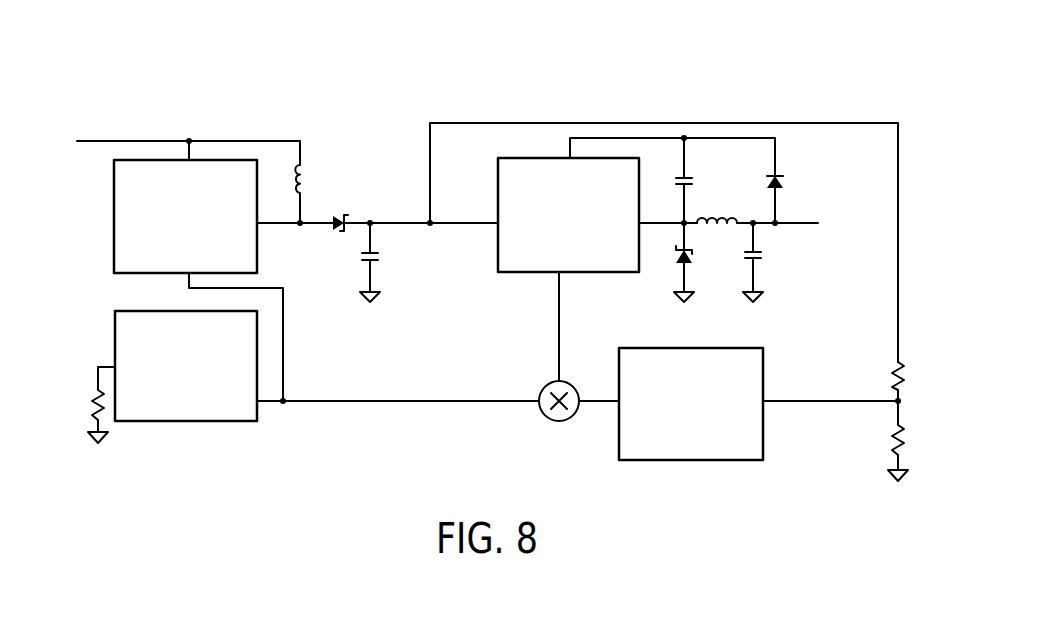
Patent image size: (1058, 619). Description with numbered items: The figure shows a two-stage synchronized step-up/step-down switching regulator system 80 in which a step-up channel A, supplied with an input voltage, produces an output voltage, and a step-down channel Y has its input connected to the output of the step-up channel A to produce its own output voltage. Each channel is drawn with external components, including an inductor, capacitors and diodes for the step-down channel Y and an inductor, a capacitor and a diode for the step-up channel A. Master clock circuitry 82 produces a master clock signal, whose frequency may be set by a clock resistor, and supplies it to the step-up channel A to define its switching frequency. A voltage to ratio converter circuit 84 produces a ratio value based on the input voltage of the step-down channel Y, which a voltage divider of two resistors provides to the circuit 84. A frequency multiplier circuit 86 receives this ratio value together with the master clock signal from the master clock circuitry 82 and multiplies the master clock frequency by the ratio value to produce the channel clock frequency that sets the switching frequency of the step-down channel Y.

The two-stage synchronized step-up/step-down switching regulator system 80 is at (481, 60).
The master clock circuitry 82 is at (220, 421).
The voltage to ratio converter circuit 84 is at (683, 460).
The frequency multiplier circuit 86 is at (556, 421).